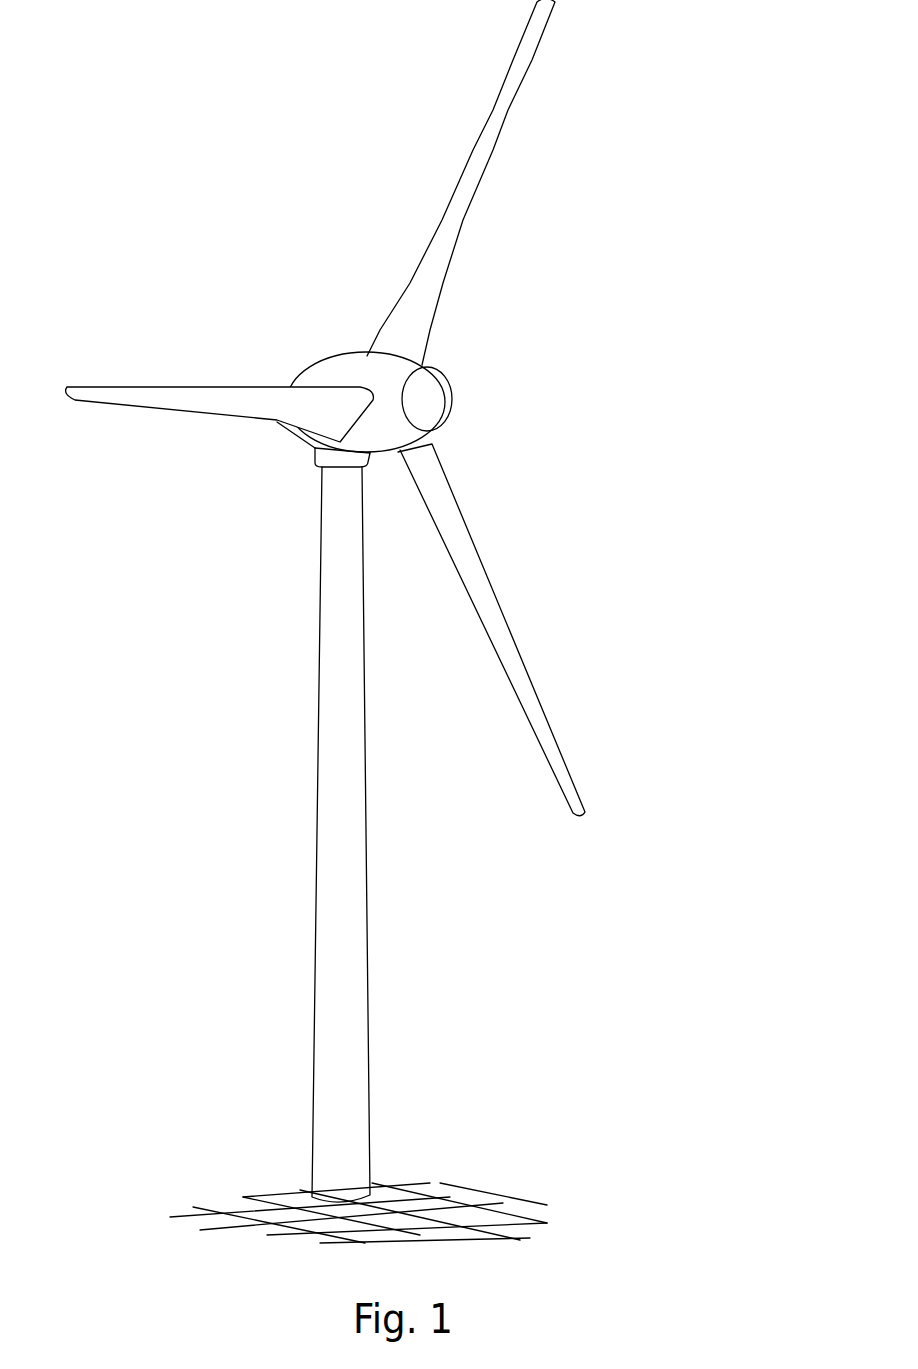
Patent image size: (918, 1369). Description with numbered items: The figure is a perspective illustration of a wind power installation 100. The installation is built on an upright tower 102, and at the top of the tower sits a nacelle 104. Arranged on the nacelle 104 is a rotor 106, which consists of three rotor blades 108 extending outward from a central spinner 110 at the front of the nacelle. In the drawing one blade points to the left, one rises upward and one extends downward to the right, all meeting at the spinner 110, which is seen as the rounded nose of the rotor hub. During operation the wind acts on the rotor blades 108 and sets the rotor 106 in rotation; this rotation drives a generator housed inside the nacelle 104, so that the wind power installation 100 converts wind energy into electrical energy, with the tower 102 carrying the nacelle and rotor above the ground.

The wind power installation 100 is at (265, 548).
The tower 102 is at (347, 945).
The nacelle 104 is at (340, 376).
The rotor 106 is at (538, 252).
The rotor blades 108 is at (497, 130).
The spinner 110 is at (433, 403).